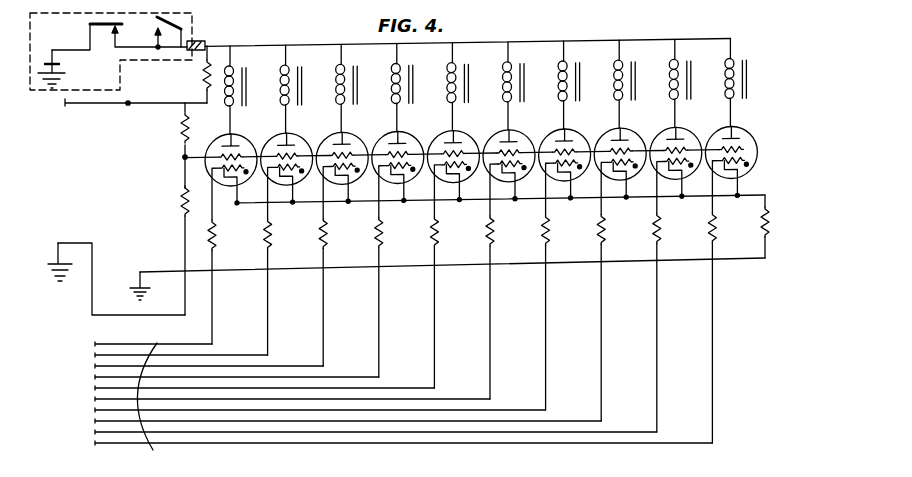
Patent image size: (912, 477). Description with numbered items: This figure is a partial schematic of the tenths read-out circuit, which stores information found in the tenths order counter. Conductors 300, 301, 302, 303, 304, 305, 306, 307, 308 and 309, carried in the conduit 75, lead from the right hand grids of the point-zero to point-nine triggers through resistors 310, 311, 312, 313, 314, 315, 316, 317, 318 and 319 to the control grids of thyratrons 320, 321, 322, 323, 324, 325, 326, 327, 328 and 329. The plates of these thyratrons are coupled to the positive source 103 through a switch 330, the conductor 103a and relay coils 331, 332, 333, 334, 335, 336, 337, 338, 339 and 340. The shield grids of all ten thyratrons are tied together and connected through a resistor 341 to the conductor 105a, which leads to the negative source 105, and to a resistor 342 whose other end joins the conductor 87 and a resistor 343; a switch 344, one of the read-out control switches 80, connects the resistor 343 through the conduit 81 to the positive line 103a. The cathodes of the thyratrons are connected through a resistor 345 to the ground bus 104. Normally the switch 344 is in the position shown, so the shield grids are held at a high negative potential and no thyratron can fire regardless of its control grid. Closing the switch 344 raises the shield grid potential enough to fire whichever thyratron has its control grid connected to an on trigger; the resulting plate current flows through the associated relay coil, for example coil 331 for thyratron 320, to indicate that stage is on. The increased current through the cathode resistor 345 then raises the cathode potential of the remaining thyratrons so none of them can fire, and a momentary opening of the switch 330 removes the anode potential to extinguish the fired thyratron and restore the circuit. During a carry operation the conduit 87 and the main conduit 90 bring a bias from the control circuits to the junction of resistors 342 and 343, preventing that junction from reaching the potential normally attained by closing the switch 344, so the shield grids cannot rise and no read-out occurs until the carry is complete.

The conduit 75 is at (152, 448).
The read-out control switches 80 is at (38, 93).
The conduit 81 is at (204, 43).
The conduit 87 is at (145, 103).
The main conduit 90 is at (115, 105).
The positive source 103 is at (58, 63).
The conductor 103a is at (318, 44).
The ground bus 104 is at (162, 262).
The negative source 105 is at (50, 262).
The conductor 105a is at (78, 243).
The conductor 300 is at (100, 347).
The conductor 301 is at (95, 355).
The conductor 302 is at (95, 366).
The conductor 303 is at (95, 377).
The conductor 304 is at (95, 388).
The conductor 305 is at (95, 399).
The conductor 306 is at (95, 410).
The conductor 307 is at (95, 421).
The conductor 308 is at (95, 432).
The conductor 309 is at (143, 452).
The resistor 310 is at (252, 235).
The resistor 311 is at (308, 235).
The resistor 312 is at (363, 235).
The resistor 313 is at (419, 235).
The resistor 314 is at (474, 235).
The resistor 315 is at (530, 235).
The resistor 316 is at (586, 235).
The resistor 317 is at (641, 235).
The resistor 318 is at (697, 235).
The resistor 319 is at (752, 235).
The thyratron 320 is at (258, 133).
The thyratron 321 is at (314, 133).
The thyratron 322 is at (369, 133).
The thyratron 323 is at (425, 133).
The thyratron 324 is at (480, 133).
The thyratron 325 is at (536, 133).
The thyratron 326 is at (592, 133).
The thyratron 327 is at (647, 133).
The thyratron 328 is at (703, 133).
The thyratron 329 is at (758, 133).
The switch 330 is at (92, 24).
The relay coil 331 is at (250, 98).
The relay coil 332 is at (306, 98).
The relay coil 333 is at (361, 98).
The relay coil 334 is at (417, 98).
The relay coil 335 is at (472, 98).
The relay coil 336 is at (528, 98).
The relay coil 337 is at (584, 98).
The relay coil 338 is at (639, 98).
The relay coil 339 is at (695, 98).
The relay coil 340 is at (746, 76).
The resistor 341 is at (162, 250).
The resistor 342 is at (162, 145).
The resistor 343 is at (181, 74).
The switch 344 is at (149, 33).
The resistor 345 is at (771, 218).